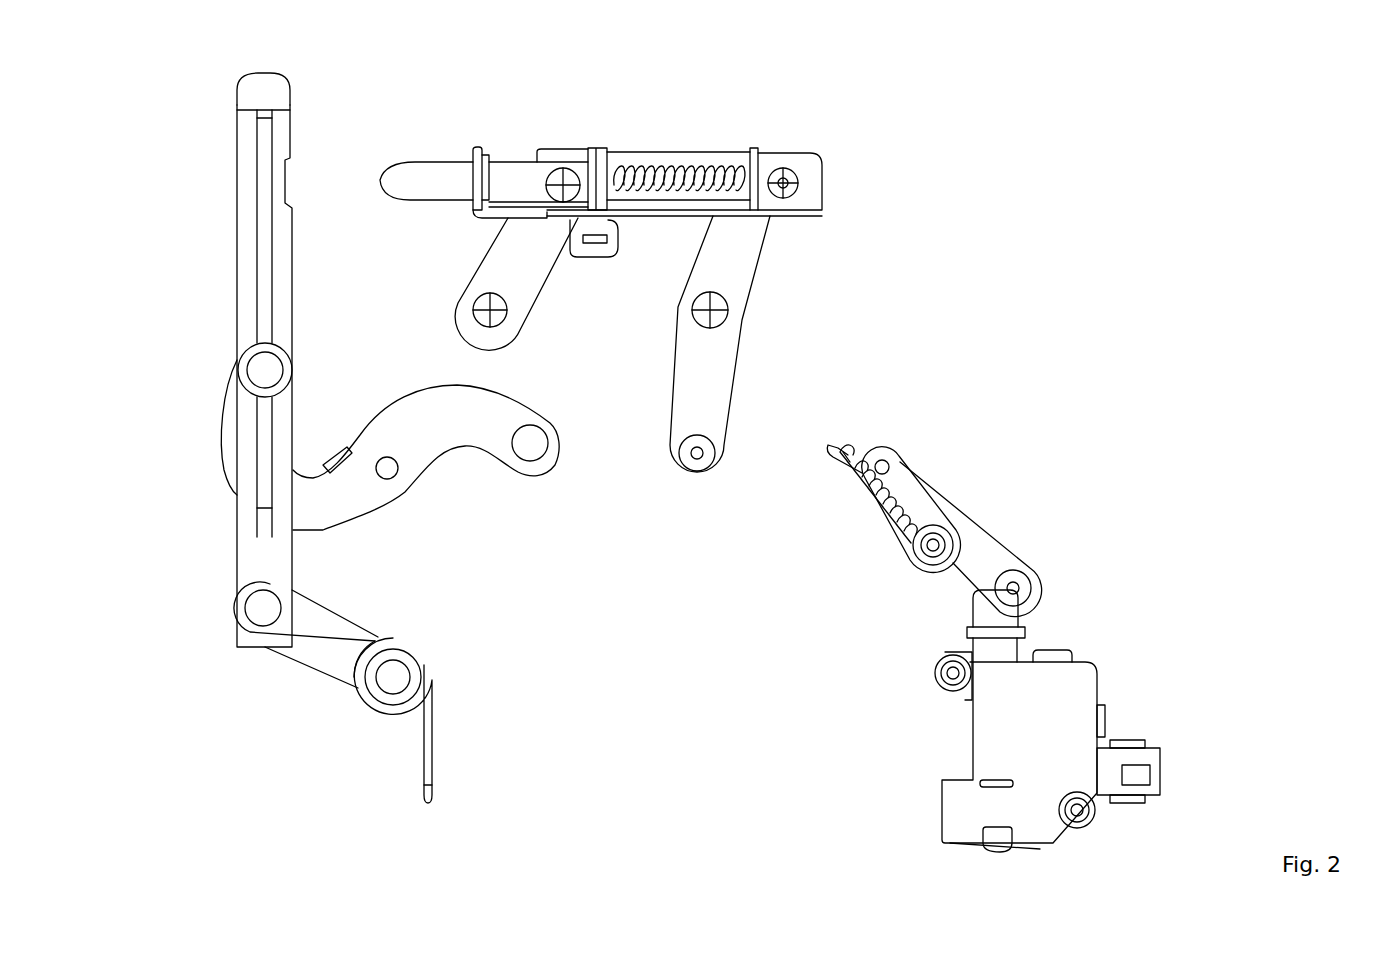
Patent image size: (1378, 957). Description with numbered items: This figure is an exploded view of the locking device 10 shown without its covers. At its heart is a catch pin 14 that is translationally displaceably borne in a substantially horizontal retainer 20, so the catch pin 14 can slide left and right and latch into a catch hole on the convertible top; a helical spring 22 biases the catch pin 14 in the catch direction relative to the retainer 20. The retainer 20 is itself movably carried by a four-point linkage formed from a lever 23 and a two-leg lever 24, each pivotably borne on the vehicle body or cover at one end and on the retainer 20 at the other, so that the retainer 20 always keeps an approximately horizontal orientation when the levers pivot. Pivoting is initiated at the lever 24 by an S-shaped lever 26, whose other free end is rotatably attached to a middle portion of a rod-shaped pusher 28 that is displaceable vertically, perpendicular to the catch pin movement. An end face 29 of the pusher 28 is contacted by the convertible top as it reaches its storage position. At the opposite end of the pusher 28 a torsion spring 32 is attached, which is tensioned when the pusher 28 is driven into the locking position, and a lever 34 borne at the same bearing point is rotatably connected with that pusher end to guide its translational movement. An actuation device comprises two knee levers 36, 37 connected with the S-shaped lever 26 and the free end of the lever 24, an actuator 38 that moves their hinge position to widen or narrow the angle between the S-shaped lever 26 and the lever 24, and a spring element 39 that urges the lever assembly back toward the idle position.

The locking device 10 is at (80, 112).
The catch pin 14 is at (508, 165).
The retainer 20 is at (795, 157).
The helical spring 22 is at (660, 165).
The lever 23 is at (538, 272).
The two-leg lever 24 is at (766, 252).
The S-shaped lever 26 is at (447, 440).
The rod-shaped pusher 28 is at (296, 562).
The end face 29 is at (264, 82).
The torsion spring 32 is at (310, 636).
The lever 34 is at (343, 672).
The knee lever 36 is at (918, 493).
The knee lever 37 is at (977, 552).
The actuator 38 is at (1083, 682).
The spring element 39 is at (887, 527).